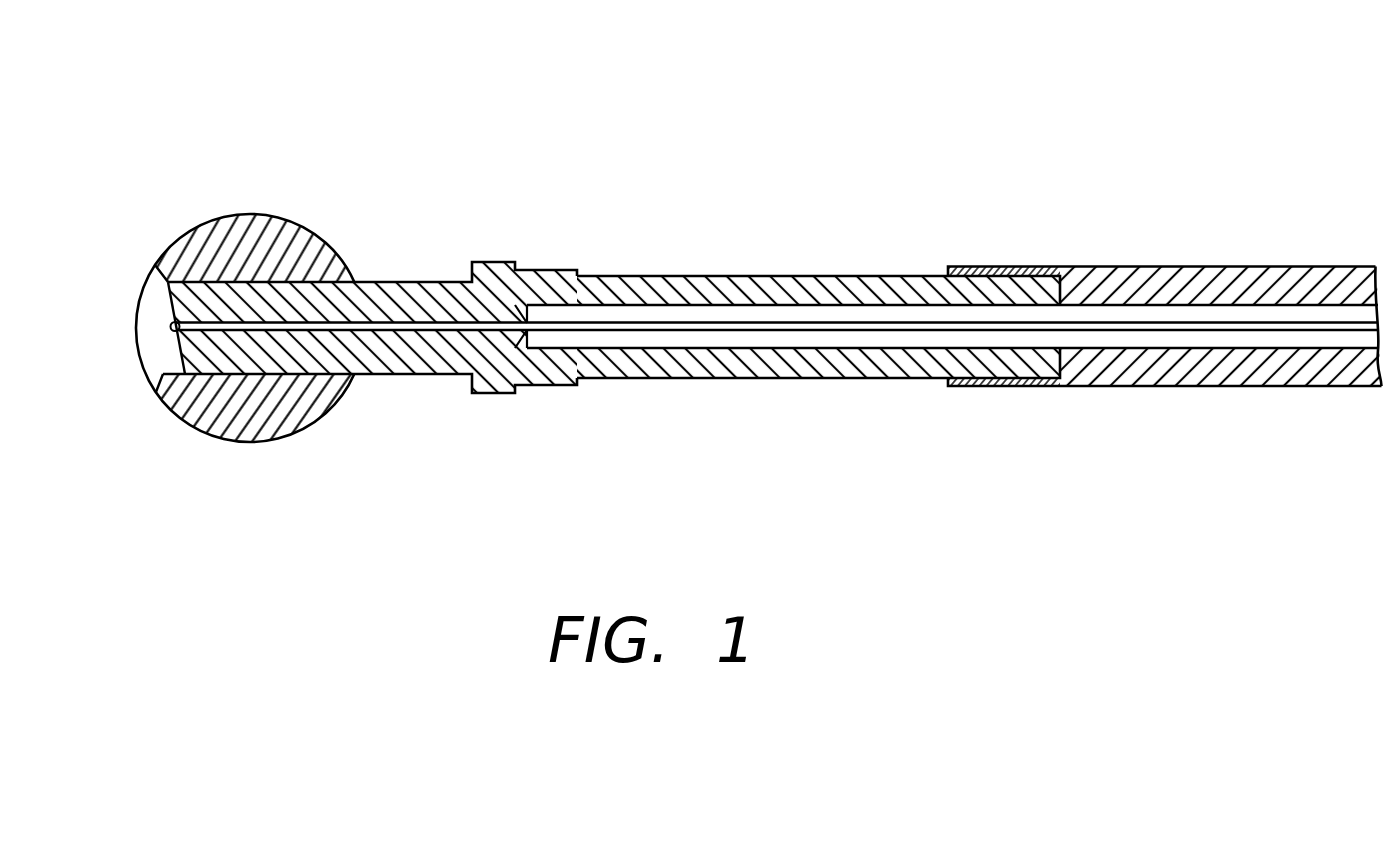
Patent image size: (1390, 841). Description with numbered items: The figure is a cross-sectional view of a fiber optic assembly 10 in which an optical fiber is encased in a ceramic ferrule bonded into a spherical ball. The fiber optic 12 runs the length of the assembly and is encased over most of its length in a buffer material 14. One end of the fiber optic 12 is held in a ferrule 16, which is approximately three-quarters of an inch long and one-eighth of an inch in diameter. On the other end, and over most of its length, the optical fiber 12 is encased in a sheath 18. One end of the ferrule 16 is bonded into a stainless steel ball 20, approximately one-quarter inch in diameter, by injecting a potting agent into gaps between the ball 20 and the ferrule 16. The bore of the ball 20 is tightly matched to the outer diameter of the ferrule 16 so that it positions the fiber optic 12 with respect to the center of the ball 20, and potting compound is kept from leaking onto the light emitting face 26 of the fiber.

The fiber optic assembly 10 is at (995, 170).
The fiber optic 12 is at (390, 320).
The buffer material 14 is at (676, 300).
The ferrule 16 is at (750, 378).
The sheath 18 is at (1172, 266).
The stainless steel ball 20 is at (272, 216).
The light emitting face 26 is at (180, 348).